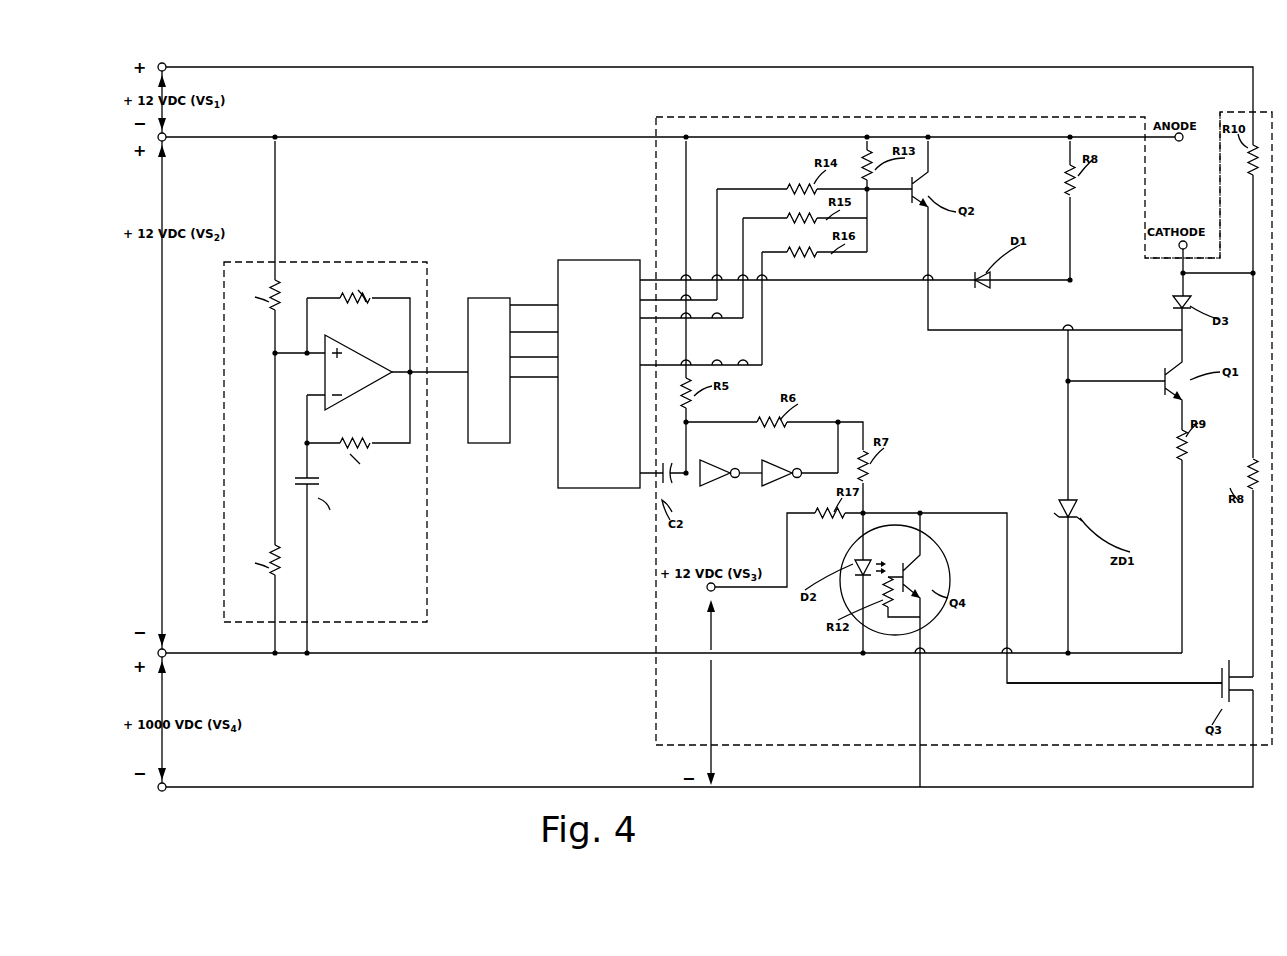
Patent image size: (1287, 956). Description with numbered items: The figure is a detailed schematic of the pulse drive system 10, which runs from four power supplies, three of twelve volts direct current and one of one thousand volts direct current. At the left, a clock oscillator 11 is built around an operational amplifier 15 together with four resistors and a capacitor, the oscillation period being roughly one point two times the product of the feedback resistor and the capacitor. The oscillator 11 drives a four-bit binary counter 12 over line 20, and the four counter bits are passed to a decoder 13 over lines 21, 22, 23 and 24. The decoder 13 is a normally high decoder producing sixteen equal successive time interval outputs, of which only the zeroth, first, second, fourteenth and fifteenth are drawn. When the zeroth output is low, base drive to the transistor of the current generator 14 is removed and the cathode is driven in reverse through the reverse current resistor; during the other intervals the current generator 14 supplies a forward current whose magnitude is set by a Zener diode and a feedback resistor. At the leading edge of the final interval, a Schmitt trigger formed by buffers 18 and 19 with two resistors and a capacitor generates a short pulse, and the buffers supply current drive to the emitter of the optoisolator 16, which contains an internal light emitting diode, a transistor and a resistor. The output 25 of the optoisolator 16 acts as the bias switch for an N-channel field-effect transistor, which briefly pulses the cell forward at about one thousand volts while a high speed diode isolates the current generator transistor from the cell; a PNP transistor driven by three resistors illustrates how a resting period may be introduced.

The pulse drive system 10 is at (988, 72).
The clock oscillator 11 is at (327, 397).
The 4-bit binary counter 12 is at (495, 292).
The decoder 13 is at (610, 254).
The current generator 14 is at (1101, 110).
The operational amplifier 15 is at (372, 350).
The optoisolator 16 is at (950, 552).
The buffer 18 is at (720, 490).
The buffer 19 is at (780, 490).
The line 20 is at (445, 368).
The line 21 is at (530, 302).
The line 22 is at (532, 312).
The line 23 is at (532, 338).
The line 24 is at (530, 380).
The output 25 is at (1072, 690).